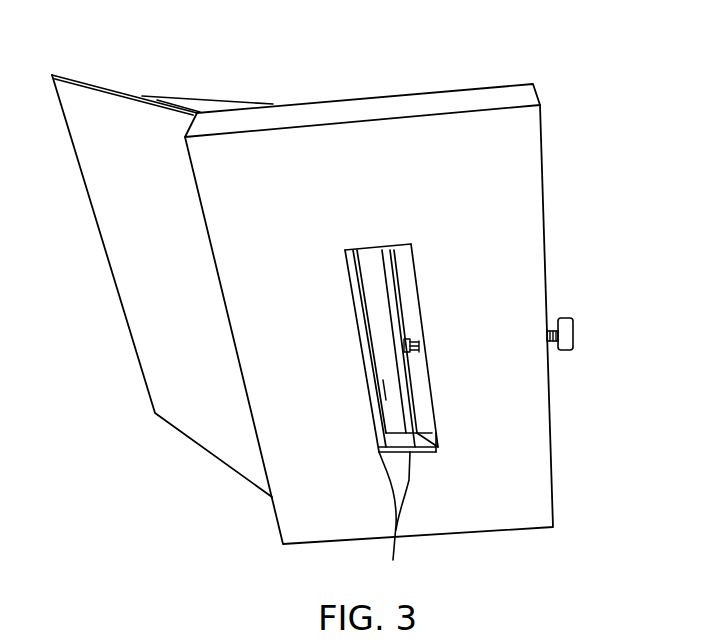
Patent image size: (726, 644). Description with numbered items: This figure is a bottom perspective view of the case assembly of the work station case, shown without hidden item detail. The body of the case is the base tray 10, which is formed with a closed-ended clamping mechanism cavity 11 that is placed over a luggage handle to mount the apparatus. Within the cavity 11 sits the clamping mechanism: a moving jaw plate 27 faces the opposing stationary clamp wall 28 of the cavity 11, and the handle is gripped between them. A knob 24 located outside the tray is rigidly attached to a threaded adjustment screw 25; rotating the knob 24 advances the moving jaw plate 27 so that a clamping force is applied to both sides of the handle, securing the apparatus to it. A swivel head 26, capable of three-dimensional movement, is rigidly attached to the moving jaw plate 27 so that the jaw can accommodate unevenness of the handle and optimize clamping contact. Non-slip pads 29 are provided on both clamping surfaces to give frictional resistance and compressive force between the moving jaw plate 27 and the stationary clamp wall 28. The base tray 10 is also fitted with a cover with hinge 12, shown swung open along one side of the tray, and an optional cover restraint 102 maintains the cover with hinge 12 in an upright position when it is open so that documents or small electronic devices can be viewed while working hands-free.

The base tray 10 is at (531, 132).
The cover with hinge 12 is at (148, 312).
The cover restraint 102 is at (208, 97).
The clamping mechanism cavity 11 is at (390, 384).
The stationary clamp wall 28 is at (360, 352).
The non-slip pads 29 is at (407, 509).
The moving jaw plate 27 is at (436, 450).
The swivel head 26 is at (411, 338).
The knob 24 is at (573, 325).
The threaded adjustment screw 25 is at (552, 342).